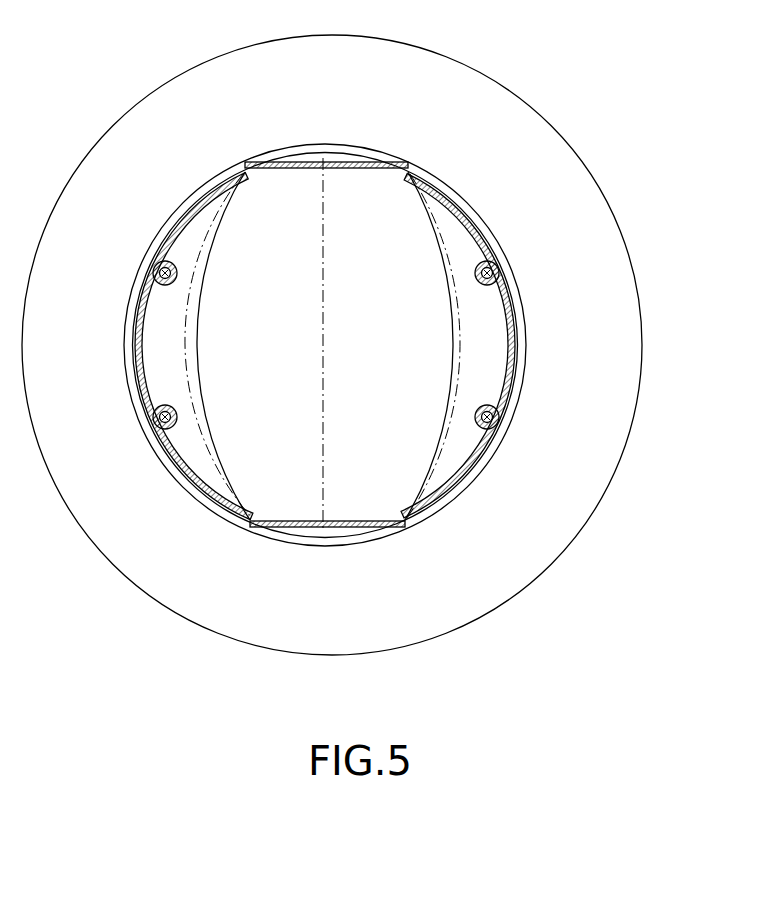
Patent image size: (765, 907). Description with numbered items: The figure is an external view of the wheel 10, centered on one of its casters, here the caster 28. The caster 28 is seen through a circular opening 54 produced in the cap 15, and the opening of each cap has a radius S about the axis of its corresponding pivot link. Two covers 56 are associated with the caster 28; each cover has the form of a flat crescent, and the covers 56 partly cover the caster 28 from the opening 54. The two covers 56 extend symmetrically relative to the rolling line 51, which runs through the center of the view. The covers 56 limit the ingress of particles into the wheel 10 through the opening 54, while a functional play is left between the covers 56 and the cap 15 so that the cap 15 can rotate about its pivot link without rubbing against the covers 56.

The wheel 10 is at (620, 588).
The cap 15 is at (617, 423).
The caster 28 is at (400, 285).
The rolling line 51 is at (325, 333).
The circular opening 54 is at (521, 368).
The covers 56 is at (156, 328).
The radius S is at (443, 178).